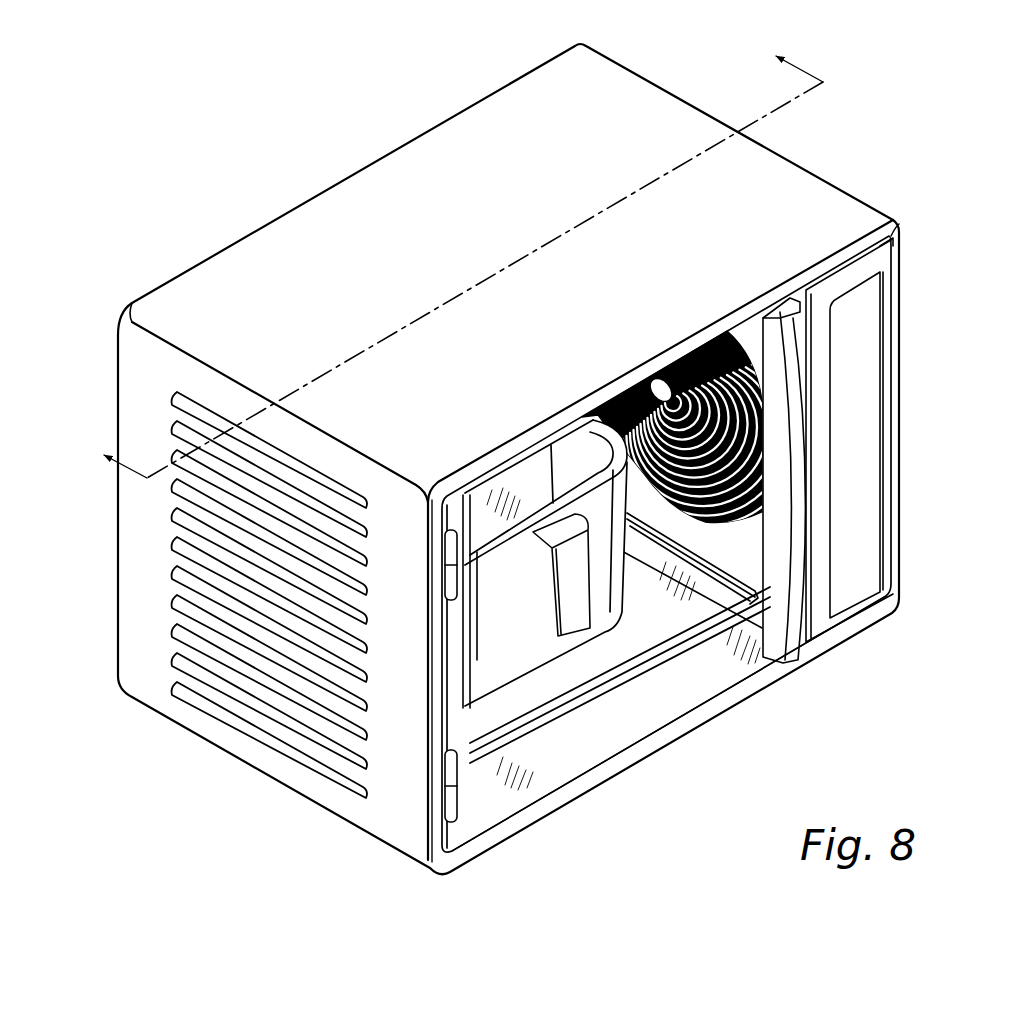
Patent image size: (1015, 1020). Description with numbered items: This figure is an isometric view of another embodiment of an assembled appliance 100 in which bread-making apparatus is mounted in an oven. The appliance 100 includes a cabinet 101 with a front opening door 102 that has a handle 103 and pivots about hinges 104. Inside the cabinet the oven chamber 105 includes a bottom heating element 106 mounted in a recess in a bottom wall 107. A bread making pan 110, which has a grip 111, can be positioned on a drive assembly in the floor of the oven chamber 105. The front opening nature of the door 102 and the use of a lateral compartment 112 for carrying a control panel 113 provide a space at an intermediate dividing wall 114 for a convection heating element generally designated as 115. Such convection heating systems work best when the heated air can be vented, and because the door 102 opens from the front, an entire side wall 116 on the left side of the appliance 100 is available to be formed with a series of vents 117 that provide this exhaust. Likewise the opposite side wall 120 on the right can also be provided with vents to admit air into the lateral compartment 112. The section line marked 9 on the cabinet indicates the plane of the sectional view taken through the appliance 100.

The appliance 100 is at (858, 165).
The cabinet 101 is at (372, 203).
The front opening door 102 is at (743, 545).
The handle 103 is at (815, 444).
The hinges 104 is at (445, 573).
The oven chamber 105 is at (746, 597).
The bottom heating element 106 is at (535, 727).
The bottom wall 107 is at (620, 709).
The bread making pan 110 is at (581, 600).
The grip 111 is at (609, 572).
The lateral compartment 112 is at (897, 609).
The control panel 113 is at (858, 300).
The intermediate dividing wall 114 is at (754, 517).
The convection heating element 115 is at (758, 453).
The side wall 116 is at (383, 818).
The vents 117 is at (272, 694).
The opposite side wall 120 is at (905, 222).
The section line 9- 9 is at (447, 254).